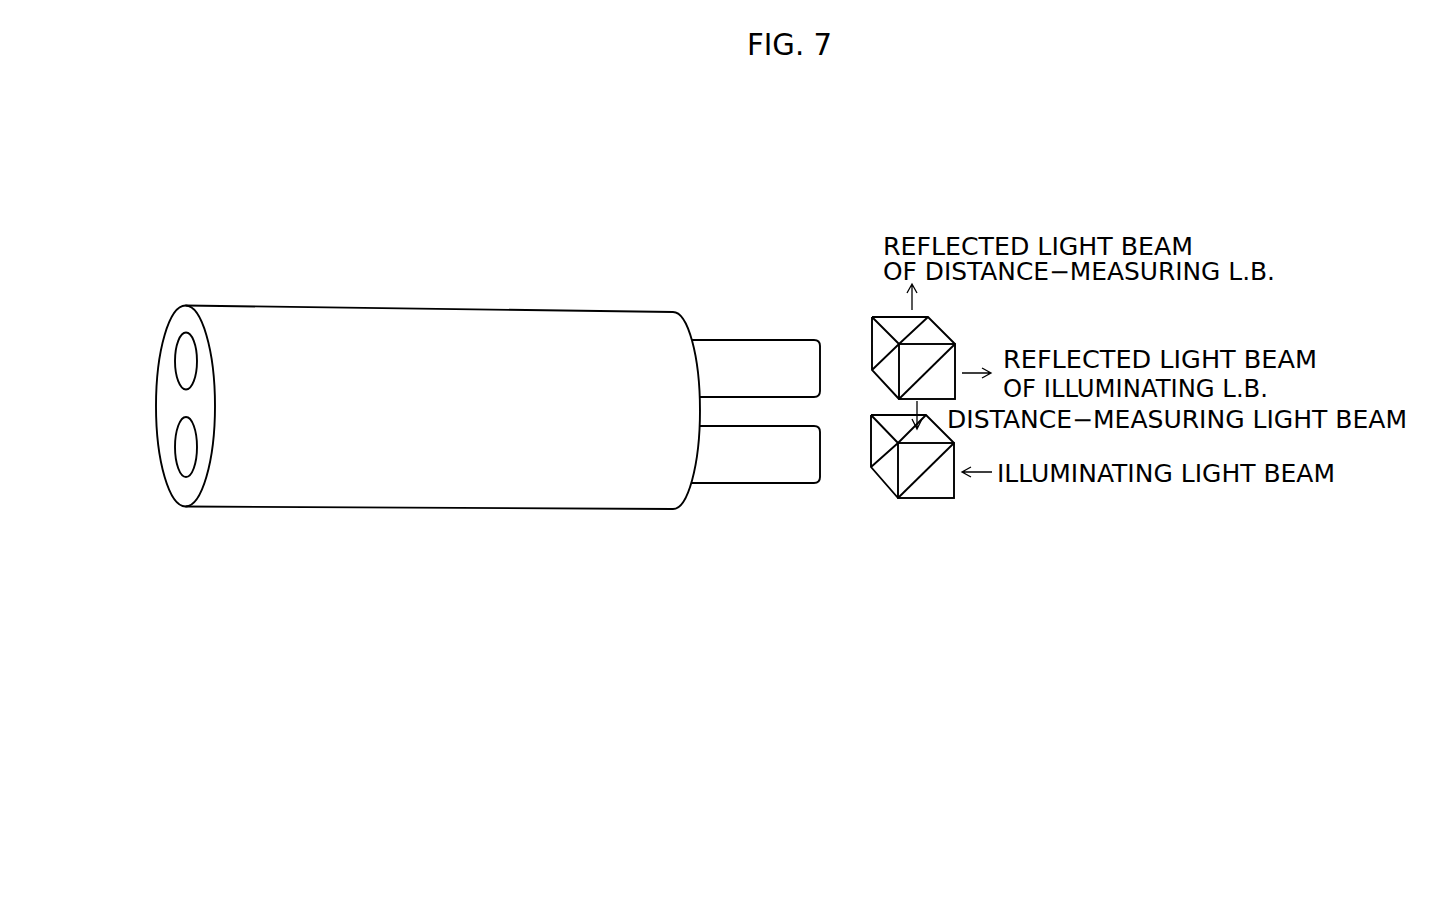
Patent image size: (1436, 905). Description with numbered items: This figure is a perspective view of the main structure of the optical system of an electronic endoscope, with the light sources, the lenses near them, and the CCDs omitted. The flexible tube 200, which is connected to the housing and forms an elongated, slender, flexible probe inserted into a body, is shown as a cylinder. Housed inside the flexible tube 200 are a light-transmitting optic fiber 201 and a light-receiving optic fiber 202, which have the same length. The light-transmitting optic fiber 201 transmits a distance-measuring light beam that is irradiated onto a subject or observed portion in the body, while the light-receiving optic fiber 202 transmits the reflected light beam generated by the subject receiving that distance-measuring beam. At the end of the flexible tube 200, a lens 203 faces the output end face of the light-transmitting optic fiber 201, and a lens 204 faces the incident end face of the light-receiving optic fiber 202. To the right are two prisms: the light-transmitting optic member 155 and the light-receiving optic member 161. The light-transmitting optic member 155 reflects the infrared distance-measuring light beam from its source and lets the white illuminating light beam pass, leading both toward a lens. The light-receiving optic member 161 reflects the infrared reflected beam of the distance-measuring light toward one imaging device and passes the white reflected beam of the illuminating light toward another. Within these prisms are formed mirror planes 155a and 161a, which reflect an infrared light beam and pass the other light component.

The flexible tube 200 is at (442, 308).
The light-transmitting optic fiber 201 is at (743, 462).
The light-receiving optic fiber 202 is at (745, 368).
The lens 203 is at (185, 447).
The lens 204 is at (185, 363).
The light-receiving optic member 161 is at (929, 326).
The mirror plane 161a is at (927, 337).
The light-transmitting optic member 155 is at (949, 498).
The mirror plane 155a is at (915, 465).